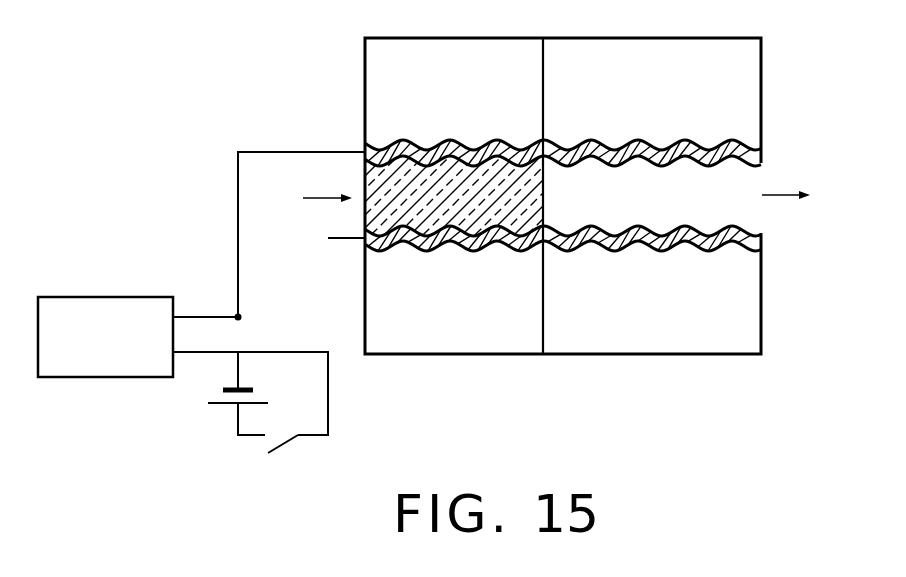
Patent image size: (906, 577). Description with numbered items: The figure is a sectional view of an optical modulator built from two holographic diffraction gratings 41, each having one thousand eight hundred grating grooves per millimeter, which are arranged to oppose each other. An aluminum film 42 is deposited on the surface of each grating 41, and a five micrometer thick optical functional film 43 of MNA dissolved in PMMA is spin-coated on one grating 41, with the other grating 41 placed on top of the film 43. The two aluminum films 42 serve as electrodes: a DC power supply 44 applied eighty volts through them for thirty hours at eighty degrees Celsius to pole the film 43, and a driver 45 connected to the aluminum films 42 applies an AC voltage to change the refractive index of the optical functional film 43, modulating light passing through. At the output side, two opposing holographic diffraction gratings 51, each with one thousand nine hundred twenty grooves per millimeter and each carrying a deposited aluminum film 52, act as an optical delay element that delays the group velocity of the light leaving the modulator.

The holographic diffraction grating 41 is at (365, 65).
The aluminum film 42 is at (365, 148).
The optical functional film 43 is at (365, 178).
The DC power supply 44 is at (205, 395).
The driver 45 is at (111, 297).
The holographic diffraction grating 51 is at (752, 66).
The aluminum film 52 is at (763, 152).